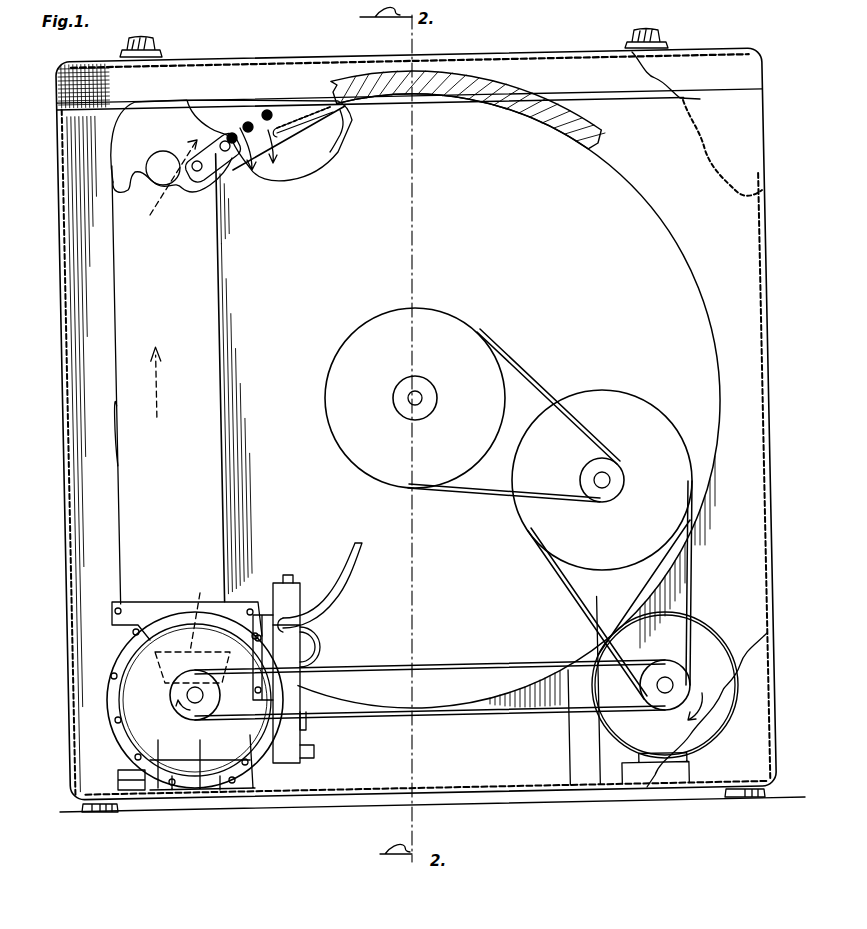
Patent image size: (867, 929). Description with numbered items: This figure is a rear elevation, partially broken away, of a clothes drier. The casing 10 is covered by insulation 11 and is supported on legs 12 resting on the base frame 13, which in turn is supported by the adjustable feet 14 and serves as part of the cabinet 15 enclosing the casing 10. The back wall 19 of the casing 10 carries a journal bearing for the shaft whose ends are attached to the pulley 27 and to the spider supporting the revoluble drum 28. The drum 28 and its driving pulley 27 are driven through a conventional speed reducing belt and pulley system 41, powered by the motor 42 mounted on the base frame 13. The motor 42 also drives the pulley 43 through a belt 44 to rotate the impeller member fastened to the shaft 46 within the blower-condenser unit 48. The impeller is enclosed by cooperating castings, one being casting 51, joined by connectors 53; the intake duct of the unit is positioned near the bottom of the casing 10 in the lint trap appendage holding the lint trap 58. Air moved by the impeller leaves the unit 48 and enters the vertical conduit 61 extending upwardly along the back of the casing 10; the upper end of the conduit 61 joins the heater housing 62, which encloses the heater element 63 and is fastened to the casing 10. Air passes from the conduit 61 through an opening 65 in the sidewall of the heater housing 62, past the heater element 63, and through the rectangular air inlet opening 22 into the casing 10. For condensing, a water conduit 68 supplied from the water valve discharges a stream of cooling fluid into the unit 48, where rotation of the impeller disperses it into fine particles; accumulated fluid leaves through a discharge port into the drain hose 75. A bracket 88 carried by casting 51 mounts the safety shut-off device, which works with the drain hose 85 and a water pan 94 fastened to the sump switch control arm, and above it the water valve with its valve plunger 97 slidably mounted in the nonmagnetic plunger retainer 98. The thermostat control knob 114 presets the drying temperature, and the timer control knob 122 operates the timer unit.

The casing 10 is at (675, 228).
The insulation 11 is at (598, 138).
The legs 12 is at (563, 745).
The base frame 13 is at (482, 800).
The adjustable feet 14 is at (88, 815).
The cabinet 15 is at (468, 55).
The back wall 19 is at (543, 272).
The air inlet opening 22 is at (277, 140).
The pulley 27 is at (358, 333).
The revoluble drum 28 is at (333, 136).
The belt and pulley system 41 is at (570, 380).
The motor 42 is at (708, 625).
The pulley 43 is at (172, 697).
The belt 44 is at (360, 720).
The shaft 46 is at (205, 695).
The blower-condenser unit 48 is at (157, 682).
The casting 51 is at (115, 645).
The connectors 53 is at (140, 728).
The lint trap 58 is at (192, 629).
The vertical conduit 61 is at (172, 424).
The heater housing 62 is at (130, 120).
The heater element 63 is at (265, 112).
The opening 65 is at (175, 190).
The water conduit 68 is at (318, 648).
The drain hose 75 is at (118, 778).
The drain hose 85 is at (306, 724).
The bracket 88 is at (287, 763).
The water pan 94 is at (312, 752).
The valve plunger 97 is at (300, 588).
The plunger retainer 98 is at (285, 575).
The control knob 114 is at (660, 28).
The timer control knob 122 is at (158, 46).